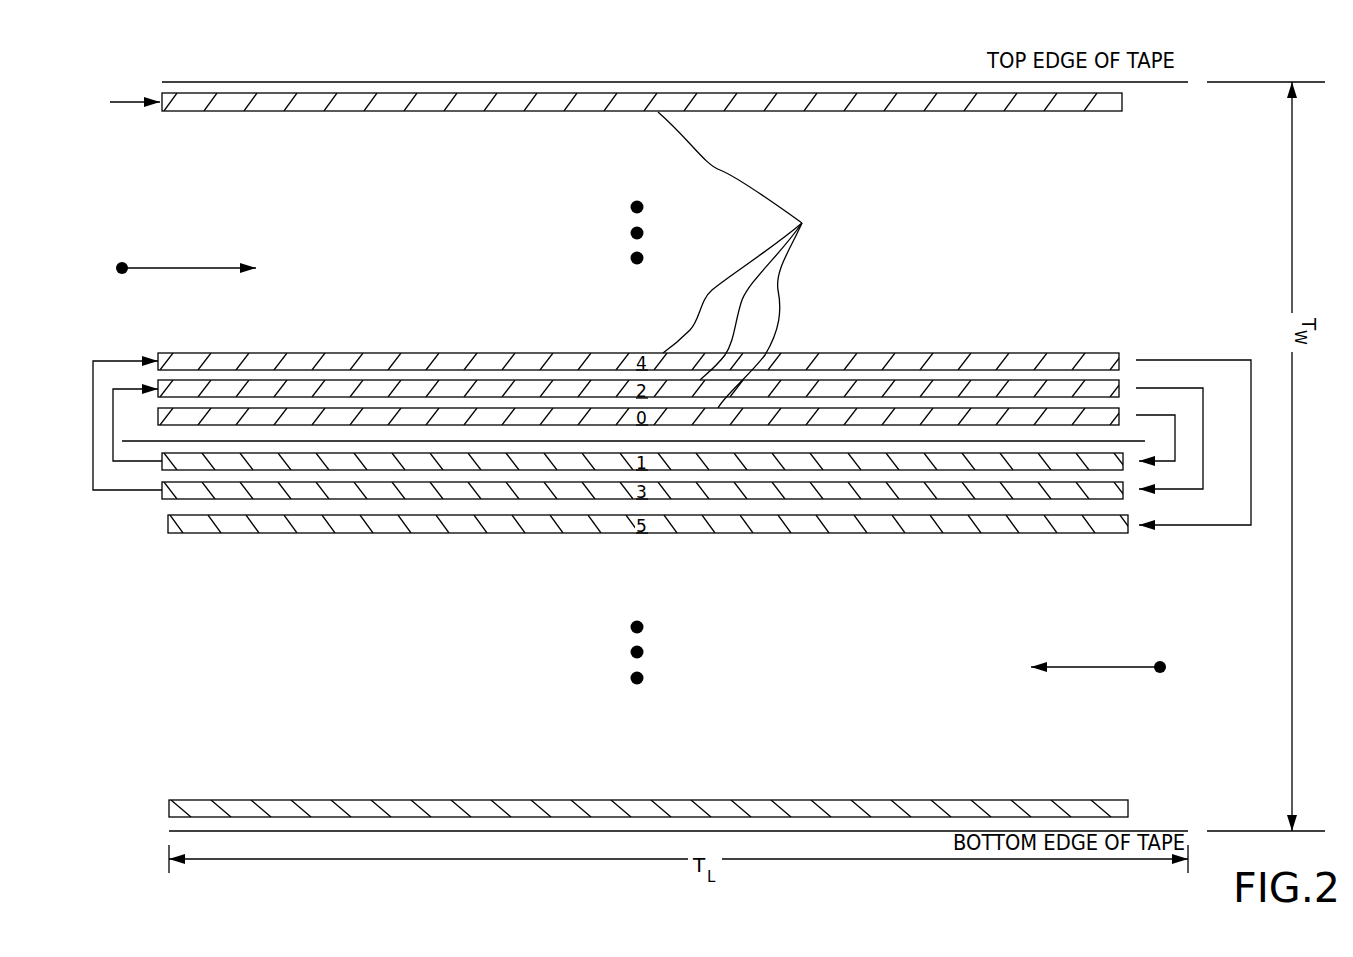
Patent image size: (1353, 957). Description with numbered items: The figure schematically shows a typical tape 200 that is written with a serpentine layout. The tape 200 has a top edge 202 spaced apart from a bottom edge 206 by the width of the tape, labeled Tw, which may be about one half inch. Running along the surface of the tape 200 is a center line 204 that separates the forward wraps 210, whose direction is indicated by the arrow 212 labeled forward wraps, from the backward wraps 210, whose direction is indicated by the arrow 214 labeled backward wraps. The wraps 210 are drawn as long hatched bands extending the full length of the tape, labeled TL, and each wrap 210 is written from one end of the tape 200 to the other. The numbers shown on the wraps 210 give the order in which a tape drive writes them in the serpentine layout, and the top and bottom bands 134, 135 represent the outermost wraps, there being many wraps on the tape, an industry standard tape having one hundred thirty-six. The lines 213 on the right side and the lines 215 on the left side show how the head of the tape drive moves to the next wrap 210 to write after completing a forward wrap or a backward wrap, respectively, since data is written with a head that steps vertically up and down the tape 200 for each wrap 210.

The tape 200 is at (108, 82).
The top edge 202 is at (172, 82).
The center line 204 is at (146, 440).
The bottom edge 206 is at (170, 830).
The wraps 210 is at (753, 260).
The arrow 212 is at (124, 266).
The lines 213 is at (1209, 347).
The arrow 214 is at (1159, 664).
The left wrap transitions 215 is at (118, 517).
The top wrap 134 is at (650, 112).
The bottom wrap 135 is at (671, 817).